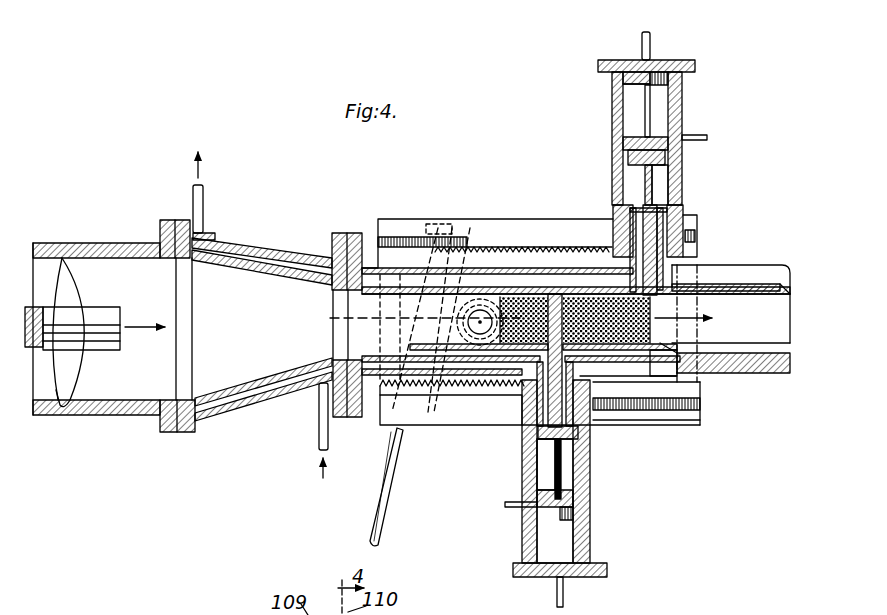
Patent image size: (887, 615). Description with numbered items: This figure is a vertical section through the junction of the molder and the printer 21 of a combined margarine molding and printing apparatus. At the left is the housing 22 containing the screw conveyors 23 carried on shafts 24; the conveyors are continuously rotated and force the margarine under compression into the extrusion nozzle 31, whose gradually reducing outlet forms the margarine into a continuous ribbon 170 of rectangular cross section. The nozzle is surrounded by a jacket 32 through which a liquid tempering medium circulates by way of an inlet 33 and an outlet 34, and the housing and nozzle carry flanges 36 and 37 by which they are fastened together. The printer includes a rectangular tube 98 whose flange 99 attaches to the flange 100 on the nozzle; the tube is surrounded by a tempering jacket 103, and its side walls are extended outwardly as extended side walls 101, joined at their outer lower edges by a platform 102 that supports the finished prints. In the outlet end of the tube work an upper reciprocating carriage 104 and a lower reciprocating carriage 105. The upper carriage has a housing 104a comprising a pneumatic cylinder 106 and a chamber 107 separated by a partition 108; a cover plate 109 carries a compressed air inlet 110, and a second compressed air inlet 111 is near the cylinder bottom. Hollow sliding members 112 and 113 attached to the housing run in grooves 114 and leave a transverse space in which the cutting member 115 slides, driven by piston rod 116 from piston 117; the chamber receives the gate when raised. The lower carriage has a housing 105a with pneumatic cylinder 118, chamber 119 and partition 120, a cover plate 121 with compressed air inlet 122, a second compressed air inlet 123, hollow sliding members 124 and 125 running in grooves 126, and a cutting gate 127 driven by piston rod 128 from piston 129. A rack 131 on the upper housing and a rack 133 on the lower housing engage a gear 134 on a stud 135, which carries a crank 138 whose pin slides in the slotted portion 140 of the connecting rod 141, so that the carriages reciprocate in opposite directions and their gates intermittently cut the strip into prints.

The printer 21 is at (535, 195).
The housing 22 is at (80, 243).
The screw conveyors 23 is at (76, 286).
The shafts 24 is at (108, 320).
The extrusion nozzle 31 is at (268, 252).
The jacket 32 is at (248, 400).
The inlet 33 is at (318, 438).
The outlet 34 is at (204, 208).
The flange 36 is at (165, 228).
The flange 37 is at (178, 222).
The tube 98 is at (368, 262).
The flange 99 is at (344, 233).
The flange 100 is at (336, 238).
The extended side walls 101 is at (758, 275).
The platform 102 is at (766, 374).
The jacket 103 is at (482, 398).
The upper reciprocating carriage 104 is at (704, 118).
The housing 104a is at (690, 164).
The lower reciprocating carriage 105 is at (616, 517).
The housing 105a is at (592, 467).
The pneumatic cylinder 106 is at (683, 82).
The chamber 107 is at (668, 186).
The partition 108 is at (612, 140).
The cover plate 109 is at (660, 70).
The compressed air inlet 110 is at (642, 42).
The second compressed air inlet 111 is at (707, 137).
The sliding member 112 is at (580, 294).
The sliding member 113 is at (724, 284).
The grooves 114 is at (790, 284).
The cutting member 115 is at (644, 185).
The piston rod 116 is at (644, 101).
The piston 117 is at (623, 78).
The pneumatic cylinder 118 is at (522, 545).
The chamber 119 is at (540, 483).
The partition 120 is at (575, 492).
The cover plate 121 is at (546, 580).
The compressed air inlet 122 is at (567, 600).
The second compressed air inlet 123 is at (503, 506).
The sliding member 124 is at (392, 350).
The sliding member 125 is at (655, 377).
The grooves 126 is at (733, 350).
The cutting gate 127 is at (596, 392).
The piston rod 128 is at (563, 453).
The piston 129 is at (565, 525).
The rack 131 is at (548, 247).
The rack 133 is at (452, 408).
The gear 134 is at (478, 262).
The stud 135 is at (420, 420).
The crank 138 is at (440, 270).
The slotted portion 140 is at (340, 320).
The connecting rod 141 is at (380, 502).
The ribbon 170 is at (522, 320).